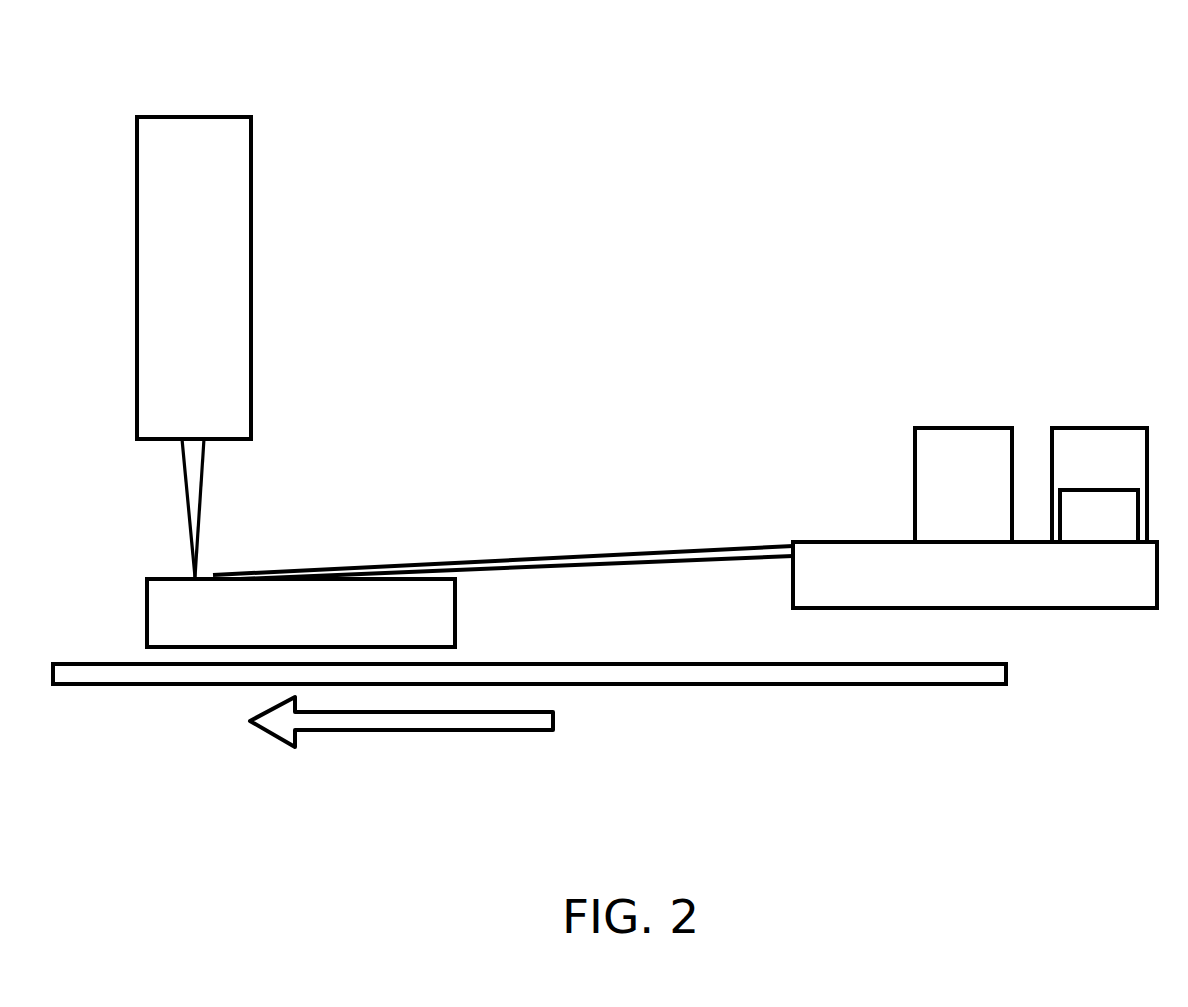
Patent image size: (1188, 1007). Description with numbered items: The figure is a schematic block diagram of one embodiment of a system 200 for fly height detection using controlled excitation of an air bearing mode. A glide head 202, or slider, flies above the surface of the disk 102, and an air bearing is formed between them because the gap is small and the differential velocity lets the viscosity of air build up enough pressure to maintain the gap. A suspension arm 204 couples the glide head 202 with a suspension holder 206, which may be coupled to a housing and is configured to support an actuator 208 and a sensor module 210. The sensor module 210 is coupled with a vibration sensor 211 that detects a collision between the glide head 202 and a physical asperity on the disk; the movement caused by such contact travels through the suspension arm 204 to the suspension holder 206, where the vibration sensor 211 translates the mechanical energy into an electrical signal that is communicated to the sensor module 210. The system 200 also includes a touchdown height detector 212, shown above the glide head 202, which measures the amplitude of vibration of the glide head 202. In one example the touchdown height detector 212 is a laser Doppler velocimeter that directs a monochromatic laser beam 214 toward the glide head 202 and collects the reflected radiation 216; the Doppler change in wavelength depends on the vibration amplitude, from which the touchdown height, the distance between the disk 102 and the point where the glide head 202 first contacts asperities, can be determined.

The system 200 is at (789, 76).
The disk 102 is at (832, 684).
The glide head 202 is at (301, 613).
The suspension arm 204 is at (510, 558).
The suspension holder 206 is at (975, 575).
The actuator 208 is at (963, 485).
The sensor module 210 is at (1099, 485).
The vibration sensor 211 is at (1099, 516).
The touchdown height detector 212 is at (252, 213).
The monochromatic laser beam 214 is at (183, 470).
The reflected radiation 216 is at (204, 465).